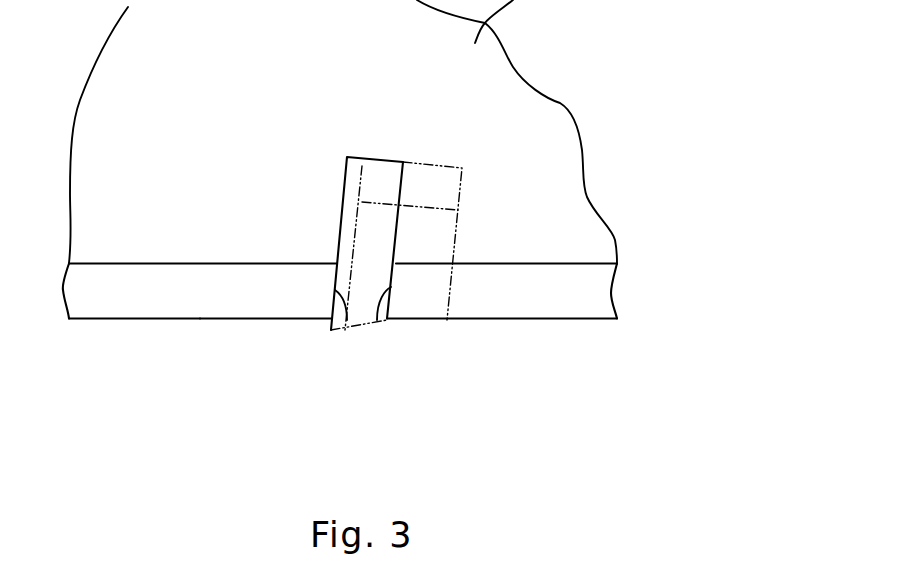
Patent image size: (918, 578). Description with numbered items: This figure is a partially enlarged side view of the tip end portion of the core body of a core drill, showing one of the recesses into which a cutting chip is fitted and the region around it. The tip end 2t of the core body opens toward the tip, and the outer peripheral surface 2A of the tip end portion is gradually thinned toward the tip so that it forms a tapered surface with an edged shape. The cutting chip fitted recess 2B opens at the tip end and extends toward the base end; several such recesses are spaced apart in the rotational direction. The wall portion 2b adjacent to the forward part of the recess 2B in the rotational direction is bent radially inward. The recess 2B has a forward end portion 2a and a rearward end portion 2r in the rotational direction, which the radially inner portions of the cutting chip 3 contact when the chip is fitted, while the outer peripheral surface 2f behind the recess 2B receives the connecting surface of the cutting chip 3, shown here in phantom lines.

The outer peripheral surface 2A is at (234, 305).
The cutting chip fitted recess 2B is at (356, 170).
The tip end 2t is at (165, 318).
The portion adjacent to forward portion of recess 2b is at (303, 304).
The outer peripheral surface adjacent to rearward portion of recess 2f is at (418, 310).
The forward end portion of recess 2a is at (347, 320).
The rearward end portion of recess 2r is at (377, 320).
The cutting chip 3 is at (455, 237).